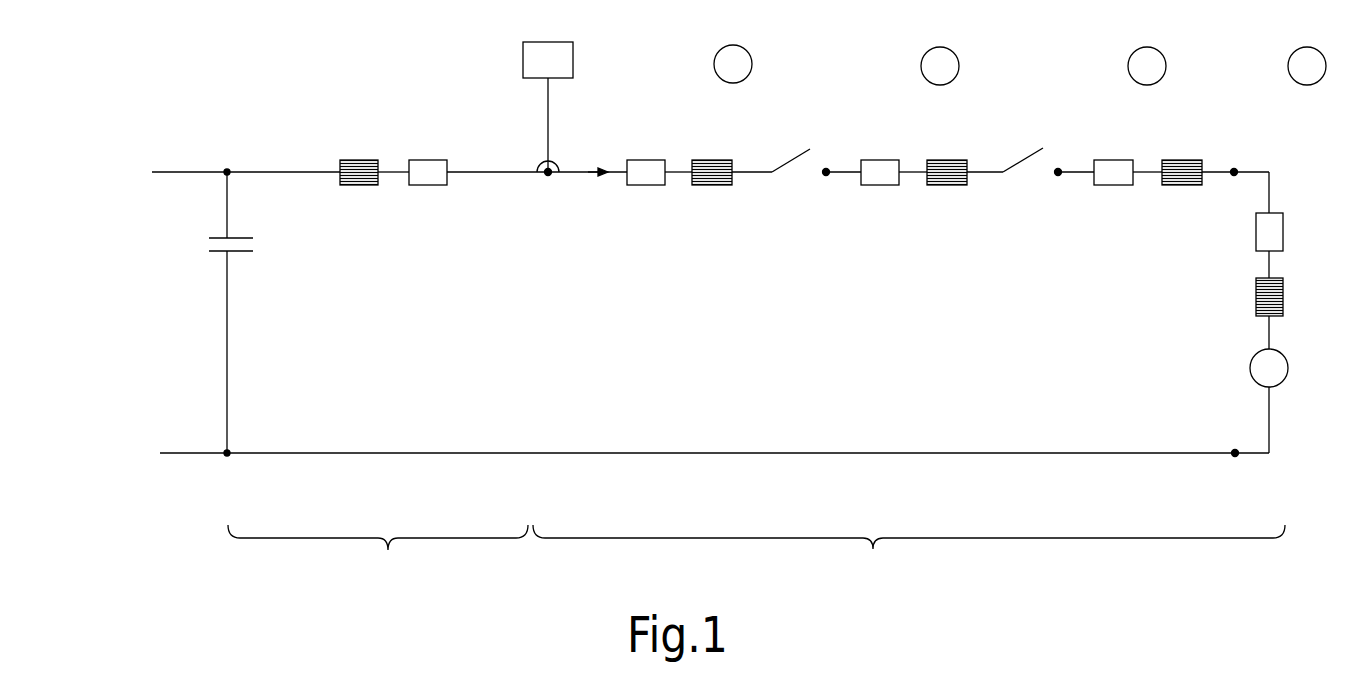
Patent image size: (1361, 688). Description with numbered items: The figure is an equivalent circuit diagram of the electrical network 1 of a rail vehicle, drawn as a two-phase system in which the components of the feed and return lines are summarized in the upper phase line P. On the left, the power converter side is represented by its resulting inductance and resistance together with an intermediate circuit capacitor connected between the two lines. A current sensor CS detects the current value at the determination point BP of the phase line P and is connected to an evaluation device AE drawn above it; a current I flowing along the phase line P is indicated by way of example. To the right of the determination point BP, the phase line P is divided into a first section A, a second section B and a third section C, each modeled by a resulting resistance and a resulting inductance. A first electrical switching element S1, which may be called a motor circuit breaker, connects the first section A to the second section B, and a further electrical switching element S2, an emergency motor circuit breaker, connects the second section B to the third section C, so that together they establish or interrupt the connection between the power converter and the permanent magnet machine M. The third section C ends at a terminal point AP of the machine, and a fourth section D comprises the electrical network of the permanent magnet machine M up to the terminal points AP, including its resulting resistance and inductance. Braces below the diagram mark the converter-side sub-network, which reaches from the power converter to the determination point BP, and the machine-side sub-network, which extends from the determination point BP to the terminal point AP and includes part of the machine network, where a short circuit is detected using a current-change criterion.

The electrical network 1 is at (222, 571).
The evaluation device AE is at (573, 62).
The current sensor CS is at (542, 177).
The determination point BP is at (549, 178).
The current I is at (596, 177).
The first electrical switching element S1 is at (787, 163).
The phase line P is at (846, 168).
The second electrical switching element S2 is at (1022, 163).
The terminal point AP is at (1237, 169).
The permanent magnet machine M is at (1288, 368).
The first section A is at (733, 64).
The second section B is at (940, 66).
The third section C is at (1147, 66).
The fourth section D is at (1307, 66).